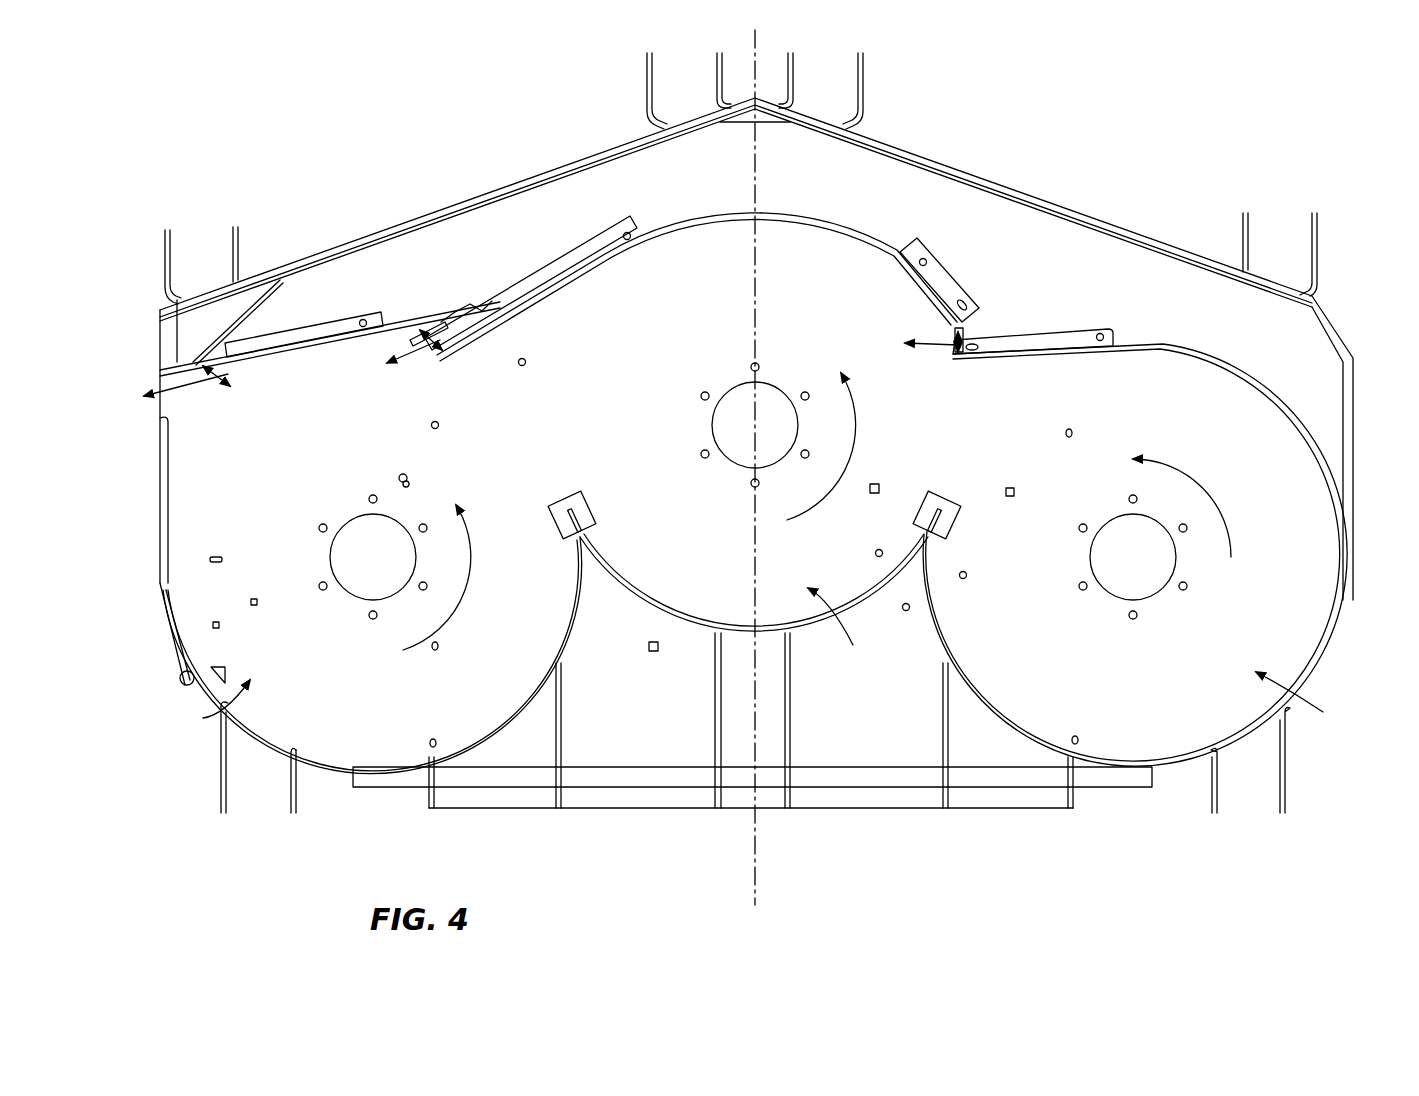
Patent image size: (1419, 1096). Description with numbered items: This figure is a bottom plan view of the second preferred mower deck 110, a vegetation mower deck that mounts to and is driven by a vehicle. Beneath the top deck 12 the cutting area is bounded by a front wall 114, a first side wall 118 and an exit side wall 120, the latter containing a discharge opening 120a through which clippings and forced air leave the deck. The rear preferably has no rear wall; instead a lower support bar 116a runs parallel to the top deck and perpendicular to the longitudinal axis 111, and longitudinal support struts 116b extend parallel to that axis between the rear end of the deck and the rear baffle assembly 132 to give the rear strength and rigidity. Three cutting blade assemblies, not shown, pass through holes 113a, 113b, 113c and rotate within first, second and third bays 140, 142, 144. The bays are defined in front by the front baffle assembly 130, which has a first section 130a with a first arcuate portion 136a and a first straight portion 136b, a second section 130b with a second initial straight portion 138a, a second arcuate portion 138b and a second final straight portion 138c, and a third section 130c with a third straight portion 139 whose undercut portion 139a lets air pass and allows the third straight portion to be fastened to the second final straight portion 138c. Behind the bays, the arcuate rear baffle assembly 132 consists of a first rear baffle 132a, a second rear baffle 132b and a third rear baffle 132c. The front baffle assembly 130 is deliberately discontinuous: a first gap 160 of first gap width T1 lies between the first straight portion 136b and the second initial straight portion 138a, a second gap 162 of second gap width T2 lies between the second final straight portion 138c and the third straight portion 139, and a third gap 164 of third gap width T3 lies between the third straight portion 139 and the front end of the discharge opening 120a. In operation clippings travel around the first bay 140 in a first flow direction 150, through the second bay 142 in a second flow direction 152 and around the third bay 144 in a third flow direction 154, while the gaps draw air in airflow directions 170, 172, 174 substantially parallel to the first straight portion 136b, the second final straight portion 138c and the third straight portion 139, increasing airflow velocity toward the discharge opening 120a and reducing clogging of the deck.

The mower deck 110 is at (1160, 101).
The longitudinal axis 111 is at (760, 47).
The deck 12 is at (968, 253).
The front wall 114 is at (497, 188).
The first side wall 118 is at (1355, 428).
The exit side wall 120 is at (188, 342).
The discharge opening 120a is at (152, 489).
The front baffle assembly 130 is at (1300, 376).
The first section 130a is at (1220, 357).
The second section 130b is at (775, 212).
The third section 130c is at (347, 327).
The rear baffle assembly 132 is at (515, 712).
The first rear baffle 132a is at (465, 757).
The second rear baffle 132b is at (803, 635).
The third rear baffle 132c is at (1040, 747).
The first arcuate portion 136a is at (1323, 497).
The first straight portion 136b is at (1133, 338).
The second initial straight portion 138a is at (927, 290).
The second arcuate portion 138b is at (868, 242).
The second final straight portion 138c is at (569, 288).
The third straight portion 139 is at (297, 337).
The undercut portion 139a is at (423, 337).
The first bay 140 is at (1315, 700).
The second bay 142 is at (861, 623).
The third bay 144 is at (203, 718).
The first flow direction 150 is at (1193, 480).
The second flow direction 152 is at (853, 432).
The third flow direction 154 is at (468, 573).
The first gap 160 is at (962, 340).
The second gap 162 is at (410, 337).
The third gap 164 is at (223, 363).
The airflow direction 170 is at (1017, 327).
The airflow direction 172 is at (487, 310).
The airflow direction 174 is at (183, 383).
The hole 113a is at (1145, 580).
The hole 113b is at (743, 445).
The hole 113c is at (363, 582).
The lower support bar 116a is at (620, 775).
The longitudinal support struts 116b is at (562, 800).
The first gap width T1 is at (948, 358).
The second gap width T2 is at (435, 355).
The third gap width T3 is at (215, 390).